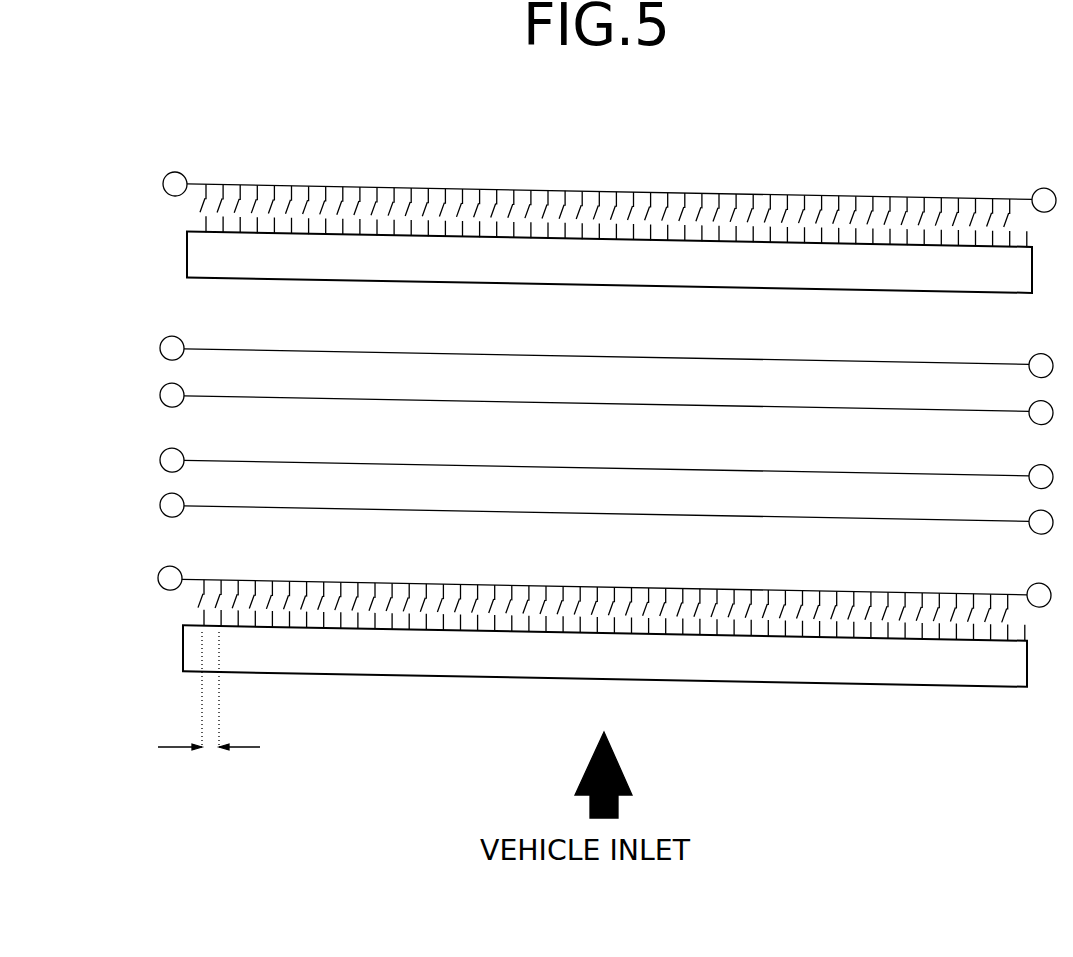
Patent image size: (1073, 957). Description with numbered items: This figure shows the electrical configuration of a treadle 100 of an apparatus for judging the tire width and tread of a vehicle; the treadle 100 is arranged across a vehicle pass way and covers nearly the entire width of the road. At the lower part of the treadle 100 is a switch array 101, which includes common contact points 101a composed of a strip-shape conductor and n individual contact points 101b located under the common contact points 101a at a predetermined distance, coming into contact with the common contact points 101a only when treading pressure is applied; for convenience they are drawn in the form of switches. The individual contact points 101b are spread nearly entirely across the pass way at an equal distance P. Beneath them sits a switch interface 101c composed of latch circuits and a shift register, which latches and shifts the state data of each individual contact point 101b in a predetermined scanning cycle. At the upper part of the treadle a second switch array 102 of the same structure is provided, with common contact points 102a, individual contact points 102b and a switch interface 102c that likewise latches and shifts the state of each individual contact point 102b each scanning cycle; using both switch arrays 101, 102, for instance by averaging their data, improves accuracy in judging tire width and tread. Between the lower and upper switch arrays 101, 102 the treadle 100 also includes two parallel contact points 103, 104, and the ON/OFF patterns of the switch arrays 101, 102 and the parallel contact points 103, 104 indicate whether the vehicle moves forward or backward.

The treadle 100 is at (920, 775).
The switch array 101 is at (98, 600).
The common contact points 101a is at (202, 589).
The individual contact points 101b is at (203, 613).
The switch interface 101c is at (183, 652).
The switch array 102 is at (98, 205).
The common contact points 102a is at (203, 192).
The individual contact points 102b is at (205, 218).
The switch interface 102c is at (187, 256).
The parallel contact point 103 is at (148, 350).
The parallel contact point 104 is at (148, 462).
The equal distance P is at (209, 711).